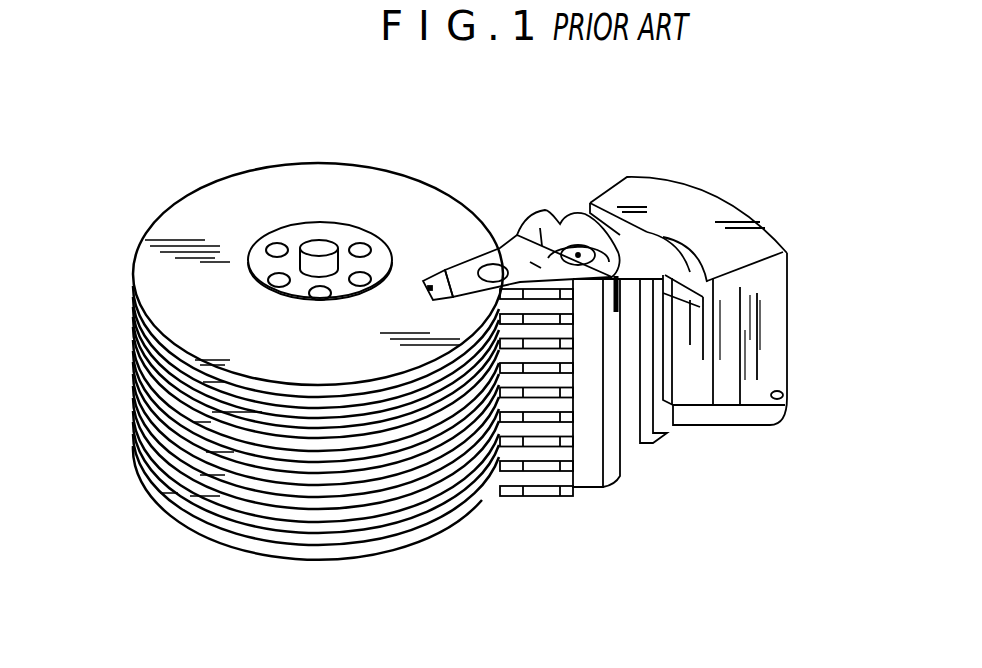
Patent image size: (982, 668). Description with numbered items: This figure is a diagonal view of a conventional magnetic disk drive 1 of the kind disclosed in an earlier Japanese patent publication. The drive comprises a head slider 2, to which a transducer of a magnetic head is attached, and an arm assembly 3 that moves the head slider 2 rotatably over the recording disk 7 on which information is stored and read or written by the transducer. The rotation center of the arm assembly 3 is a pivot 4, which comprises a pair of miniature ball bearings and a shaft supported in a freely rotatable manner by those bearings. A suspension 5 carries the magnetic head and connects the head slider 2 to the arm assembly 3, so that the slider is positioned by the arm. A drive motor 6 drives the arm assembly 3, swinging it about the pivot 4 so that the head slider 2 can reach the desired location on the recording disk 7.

The magnetic disk drive 1 is at (507, 170).
The head slider 2 is at (351, 306).
The arm assembly 3 is at (613, 403).
The pivot 4 is at (578, 252).
The suspension 5 is at (407, 291).
The drive motor 6 is at (757, 196).
The recording disk 7 is at (245, 179).